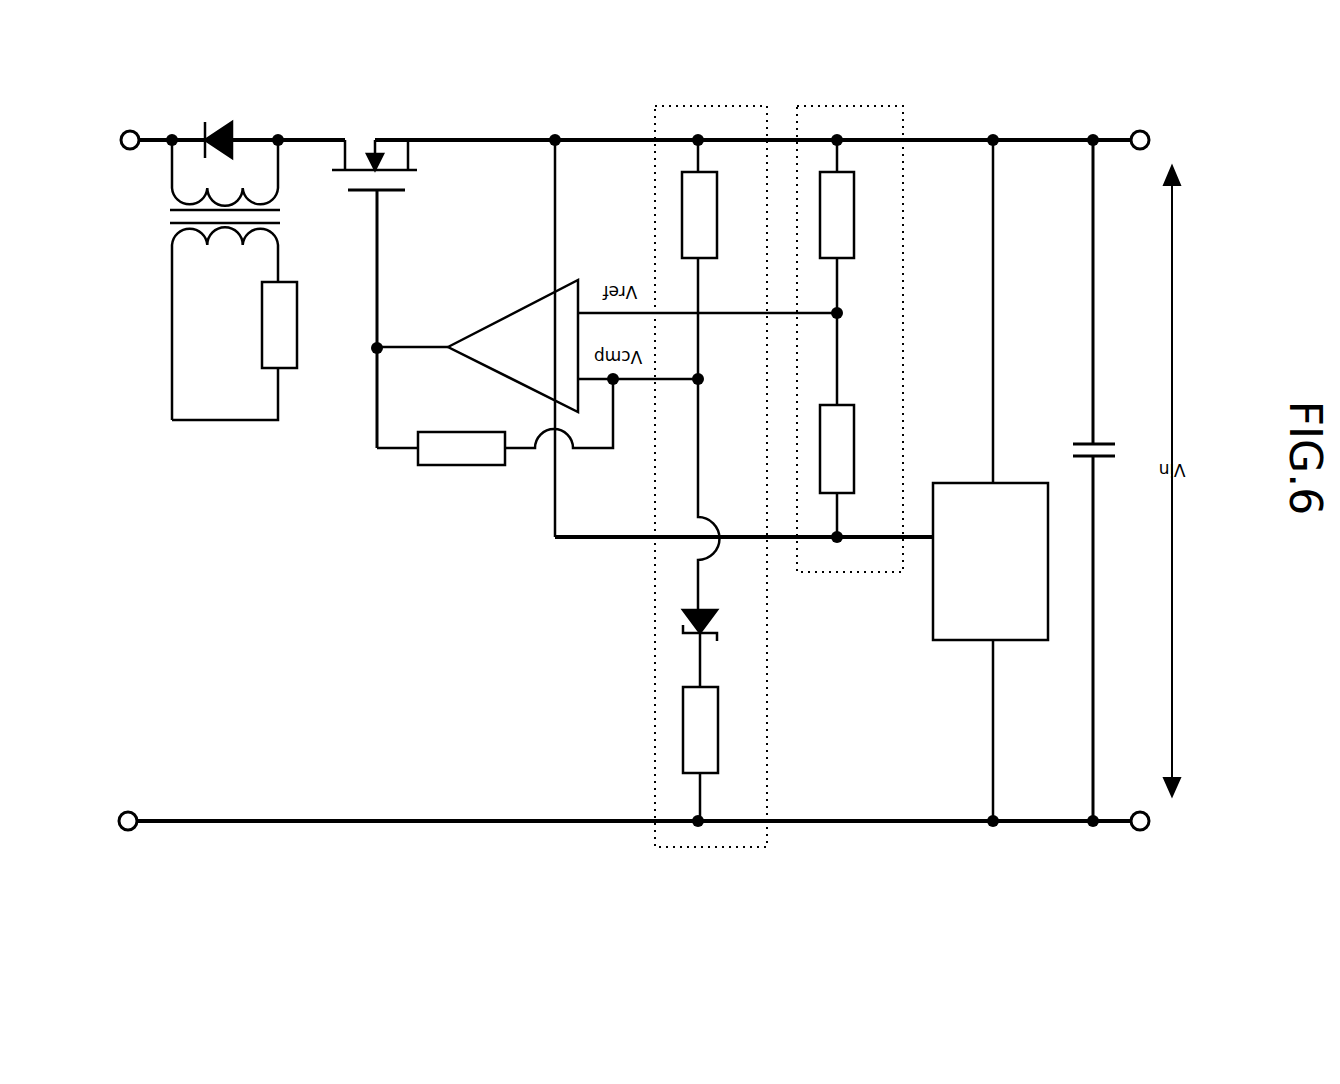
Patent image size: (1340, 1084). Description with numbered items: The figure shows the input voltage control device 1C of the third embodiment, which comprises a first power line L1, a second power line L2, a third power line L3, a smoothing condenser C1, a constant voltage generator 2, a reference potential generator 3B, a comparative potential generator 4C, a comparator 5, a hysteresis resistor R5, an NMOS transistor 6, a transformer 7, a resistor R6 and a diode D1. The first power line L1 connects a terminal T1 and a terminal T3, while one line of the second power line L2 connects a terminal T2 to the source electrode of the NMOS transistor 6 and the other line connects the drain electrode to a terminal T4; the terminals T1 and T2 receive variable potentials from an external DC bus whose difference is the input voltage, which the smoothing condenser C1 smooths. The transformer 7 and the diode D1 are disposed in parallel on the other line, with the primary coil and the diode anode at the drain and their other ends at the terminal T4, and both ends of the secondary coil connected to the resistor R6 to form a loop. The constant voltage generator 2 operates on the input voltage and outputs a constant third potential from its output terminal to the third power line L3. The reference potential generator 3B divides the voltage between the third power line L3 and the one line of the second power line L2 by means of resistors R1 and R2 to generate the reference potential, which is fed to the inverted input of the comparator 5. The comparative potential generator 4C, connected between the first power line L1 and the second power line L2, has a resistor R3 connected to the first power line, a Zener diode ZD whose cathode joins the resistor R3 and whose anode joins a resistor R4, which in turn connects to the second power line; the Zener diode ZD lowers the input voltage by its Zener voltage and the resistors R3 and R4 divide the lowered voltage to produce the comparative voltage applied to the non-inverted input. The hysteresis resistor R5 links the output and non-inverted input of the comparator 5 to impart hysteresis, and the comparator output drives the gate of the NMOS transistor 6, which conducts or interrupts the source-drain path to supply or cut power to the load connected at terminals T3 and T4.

The input voltage control device 1C is at (592, 893).
The constant voltage generator 2 is at (1022, 642).
The reference potential generator 3B is at (850, 370).
The comparative potential generator 4C is at (711, 510).
The comparator 5 is at (517, 310).
The NMOS transistor 6 is at (345, 182).
The transformer 7 is at (203, 280).
The resistor R1 is at (837, 449).
The resistor R2 is at (837, 215).
The resistor R3 is at (700, 730).
The resistor R4 is at (699, 215).
The hysteresis resistor R5 is at (461, 448).
The resistor R6 is at (279, 325).
The smoothing condenser C1 is at (1107, 480).
The diode D1 is at (218, 124).
The Zener diode ZD is at (718, 625).
The terminal T1 is at (1159, 823).
The terminal T2 is at (1160, 142).
The terminal T3 is at (110, 820).
The terminal T4 is at (111, 140).
The first power line L1 is at (940, 822).
The second power line L2 is at (947, 137).
The third power line L3 is at (590, 540).